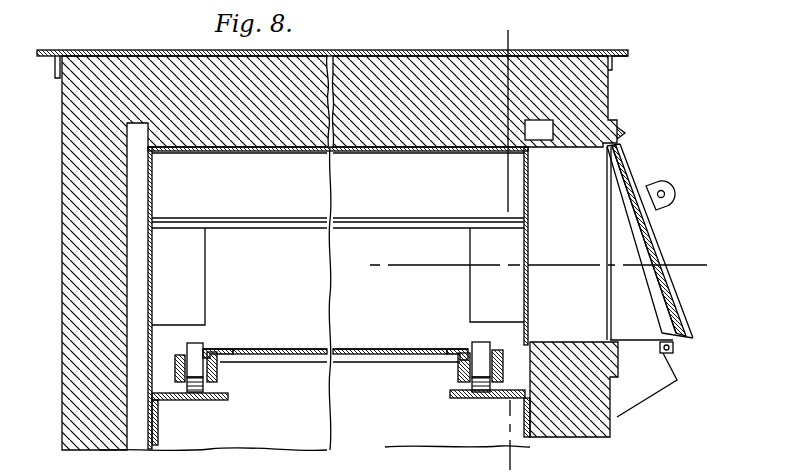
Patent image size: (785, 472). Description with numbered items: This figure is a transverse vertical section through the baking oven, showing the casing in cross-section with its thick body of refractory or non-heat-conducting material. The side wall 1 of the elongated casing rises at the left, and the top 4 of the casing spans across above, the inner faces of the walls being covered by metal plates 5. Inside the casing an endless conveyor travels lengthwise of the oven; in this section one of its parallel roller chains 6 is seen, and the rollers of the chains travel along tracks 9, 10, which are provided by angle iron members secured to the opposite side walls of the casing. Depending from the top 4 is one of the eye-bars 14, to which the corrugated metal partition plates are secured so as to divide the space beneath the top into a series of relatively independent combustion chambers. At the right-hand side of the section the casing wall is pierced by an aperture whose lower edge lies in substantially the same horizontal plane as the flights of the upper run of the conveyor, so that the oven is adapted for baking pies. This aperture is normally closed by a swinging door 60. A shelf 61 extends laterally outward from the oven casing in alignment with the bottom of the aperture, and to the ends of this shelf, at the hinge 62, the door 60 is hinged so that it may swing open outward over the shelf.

The side wall 1 is at (80, 300).
The top 4 is at (375, 70).
The metal plates 5 is at (152, 302).
The roller chain 6 is at (218, 378).
The track 9 is at (193, 400).
The track 10 is at (504, 30).
The eye-bar 14 is at (338, 254).
The swinging door 60 is at (650, 250).
The shelf 61 is at (643, 345).
The hinge 62 is at (675, 352).